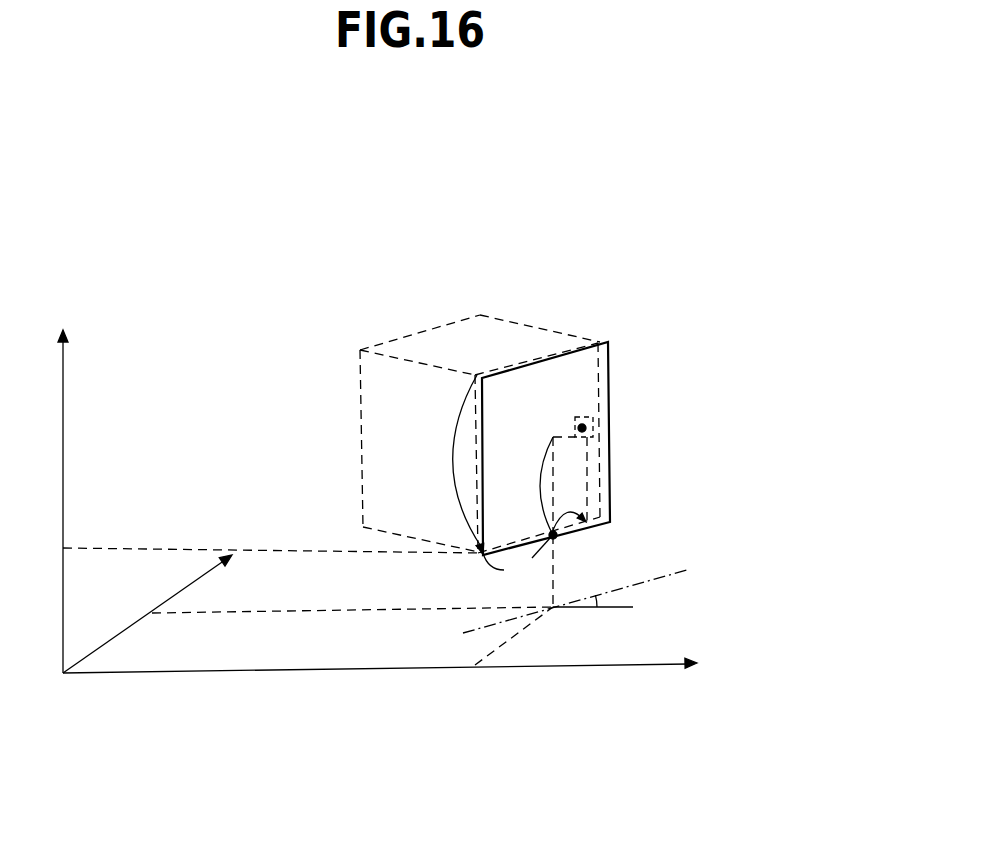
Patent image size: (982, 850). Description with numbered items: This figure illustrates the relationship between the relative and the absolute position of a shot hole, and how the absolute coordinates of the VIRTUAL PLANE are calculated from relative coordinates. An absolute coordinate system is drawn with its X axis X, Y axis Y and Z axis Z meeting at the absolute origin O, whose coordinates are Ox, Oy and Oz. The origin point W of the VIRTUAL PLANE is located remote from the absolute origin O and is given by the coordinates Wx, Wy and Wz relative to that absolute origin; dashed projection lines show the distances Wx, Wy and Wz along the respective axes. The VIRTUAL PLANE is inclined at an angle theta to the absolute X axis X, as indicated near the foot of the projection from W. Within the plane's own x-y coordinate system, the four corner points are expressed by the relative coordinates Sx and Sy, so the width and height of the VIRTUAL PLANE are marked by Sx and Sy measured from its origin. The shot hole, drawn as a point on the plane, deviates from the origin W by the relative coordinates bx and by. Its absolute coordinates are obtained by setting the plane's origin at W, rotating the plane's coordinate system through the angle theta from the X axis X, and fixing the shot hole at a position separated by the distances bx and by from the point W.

The absolute X axis X is at (393, 665).
The absolute Y axis Y is at (57, 488).
The absolute Z axis Z is at (156, 611).
The absolute origin coordinates O is at (114, 692).
The x coordinate of virtual plane origin Wx is at (505, 615).
The y coordinate of virtual plane origin Wy is at (253, 550).
The z coordinate of virtual plane origin Wz is at (329, 601).
The virtual plane VIRTUAL PLANE is at (558, 376).
The virtual plane corner y coordinate Sy is at (453, 464).
The virtual plane corner x coordinate Sx is at (517, 559).
The relative y deviation of shot hole by is at (531, 486).
The relative x deviation of shot hole bx is at (569, 510).